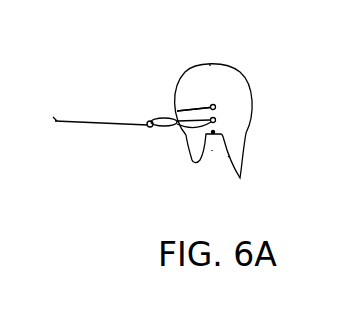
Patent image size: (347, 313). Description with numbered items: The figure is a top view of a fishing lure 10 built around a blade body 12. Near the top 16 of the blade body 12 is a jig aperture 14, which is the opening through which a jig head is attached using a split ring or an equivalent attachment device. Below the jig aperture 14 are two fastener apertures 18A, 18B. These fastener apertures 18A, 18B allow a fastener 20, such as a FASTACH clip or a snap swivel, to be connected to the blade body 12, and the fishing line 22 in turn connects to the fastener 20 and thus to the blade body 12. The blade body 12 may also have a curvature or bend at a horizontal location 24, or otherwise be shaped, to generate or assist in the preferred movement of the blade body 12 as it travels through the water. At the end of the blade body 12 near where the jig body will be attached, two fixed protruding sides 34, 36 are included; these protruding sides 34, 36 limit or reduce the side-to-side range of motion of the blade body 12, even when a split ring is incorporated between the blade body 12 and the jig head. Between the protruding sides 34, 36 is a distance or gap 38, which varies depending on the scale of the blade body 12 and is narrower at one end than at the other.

The orthodontic appliance 10 is at (152, 66).
The tooth crown 12 is at (237, 97).
The attachment point 14 is at (216, 132).
The tooth root 16 is at (228, 157).
The first attachment ring 18A is at (215, 105).
The second attachment ring 18B is at (216, 119).
The connector clasp 20 is at (158, 116).
The wire 22 is at (72, 125).
The crown top 24 is at (212, 72).
The root surface 34 is at (230, 155).
The first root 36 is at (193, 152).
The root furcation 38 is at (212, 152).